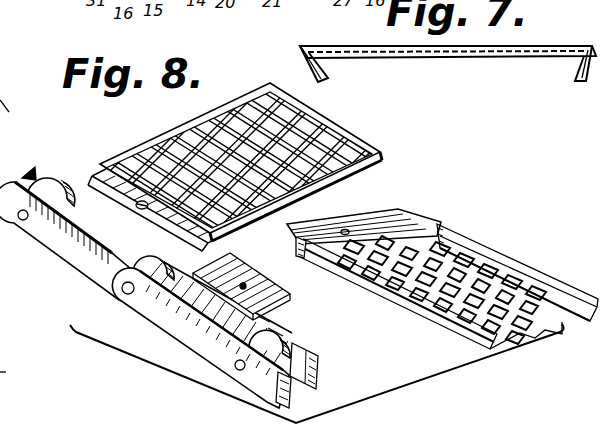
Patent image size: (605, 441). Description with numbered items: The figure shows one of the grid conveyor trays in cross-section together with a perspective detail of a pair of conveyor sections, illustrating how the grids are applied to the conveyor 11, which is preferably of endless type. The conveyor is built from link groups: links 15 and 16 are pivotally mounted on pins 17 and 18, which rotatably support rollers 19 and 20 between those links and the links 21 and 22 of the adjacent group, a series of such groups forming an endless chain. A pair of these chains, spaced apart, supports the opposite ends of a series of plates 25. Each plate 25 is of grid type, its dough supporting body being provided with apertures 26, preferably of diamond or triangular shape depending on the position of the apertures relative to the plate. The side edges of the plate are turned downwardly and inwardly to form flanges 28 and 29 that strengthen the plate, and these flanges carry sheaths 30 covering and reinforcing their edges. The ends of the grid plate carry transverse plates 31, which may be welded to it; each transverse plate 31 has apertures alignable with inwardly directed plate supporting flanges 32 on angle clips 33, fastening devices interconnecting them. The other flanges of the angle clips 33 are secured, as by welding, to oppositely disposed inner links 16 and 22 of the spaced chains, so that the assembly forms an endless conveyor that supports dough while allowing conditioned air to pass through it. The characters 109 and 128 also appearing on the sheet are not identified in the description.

In FIG. 8, the conveyor 11 is at (101, 164).
In FIG. 8, the link 15 is at (290, 394).
In FIG. 8, the link 16 is at (179, 257).
In FIG. 8, the pin 17 is at (230, 362).
In FIG. 8, the pin 18 is at (123, 296).
In FIG. 8, the roller 19 is at (306, 348).
In FIG. 8, the roller 20 is at (108, 282).
In FIG. 8, the link 21 is at (205, 334).
In FIG. 8, the link 22 is at (270, 312).
In FIG. 7, the plate 25 is at (546, 47).
In FIG. 8, the plate 25 is at (386, 133).
In FIG. 7, the aperture 26 is at (423, 58).
In FIG. 8, the aperture 26 is at (305, 116).
In FIG. 7, the flange 28 is at (572, 60).
In FIG. 8, the flange 28 is at (440, 224).
In FIG. 7, the flange 29 is at (302, 58).
In FIG. 8, the flange 29 is at (299, 247).
In FIG. 7, the sheath 30 is at (581, 81).
In FIG. 8, the sheath 30 is at (333, 186).
In FIG. 8, the transverse plate 31 is at (396, 210).
In FIG. 8, the plate supporting flange 32 is at (248, 273).
In FIG. 8, the angle clip 33 is at (284, 332).
In FIG. 8, the part 109 is at (23, 113).
In FIG. 8, the part 128 is at (23, 377).